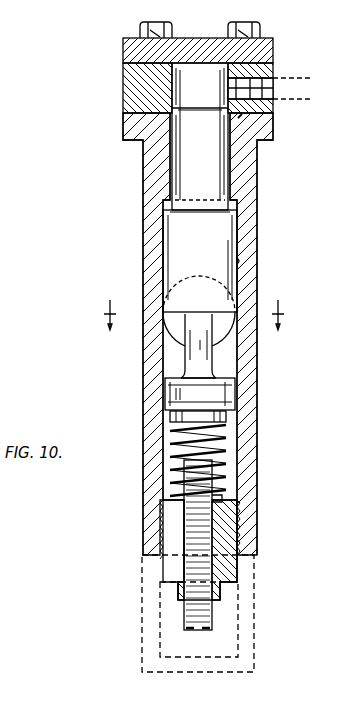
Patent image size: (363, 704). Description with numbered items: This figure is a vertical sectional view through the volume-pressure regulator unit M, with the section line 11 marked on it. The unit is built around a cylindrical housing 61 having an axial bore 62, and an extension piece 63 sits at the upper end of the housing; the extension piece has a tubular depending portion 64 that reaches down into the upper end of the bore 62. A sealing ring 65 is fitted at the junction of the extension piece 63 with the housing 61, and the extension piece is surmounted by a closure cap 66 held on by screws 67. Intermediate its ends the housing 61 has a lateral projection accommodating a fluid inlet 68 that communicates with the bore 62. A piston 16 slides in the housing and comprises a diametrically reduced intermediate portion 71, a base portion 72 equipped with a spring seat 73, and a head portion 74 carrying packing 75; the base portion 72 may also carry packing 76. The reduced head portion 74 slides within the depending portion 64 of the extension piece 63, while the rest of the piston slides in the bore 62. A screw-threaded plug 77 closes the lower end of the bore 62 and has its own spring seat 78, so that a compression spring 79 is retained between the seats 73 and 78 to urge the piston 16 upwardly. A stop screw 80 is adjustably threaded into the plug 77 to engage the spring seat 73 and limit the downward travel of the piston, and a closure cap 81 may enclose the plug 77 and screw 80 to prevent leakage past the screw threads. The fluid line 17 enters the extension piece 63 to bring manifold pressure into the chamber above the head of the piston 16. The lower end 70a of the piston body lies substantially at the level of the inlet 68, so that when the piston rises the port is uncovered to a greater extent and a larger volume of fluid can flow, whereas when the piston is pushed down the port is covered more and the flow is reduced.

The section line 11- 11 is at (196, 307).
The piston 16 is at (230, 276).
The fluid line 17 is at (312, 78).
The cylindrical housing 61 is at (258, 358).
The axial bore 62 is at (240, 261).
The extension piece 63 is at (122, 94).
The tubular depending portion 64 is at (258, 167).
The sealing ring 65 is at (242, 118).
The closure cap 66 is at (273, 52).
The screws 67 is at (260, 27).
The fluid inlet 68 is at (215, 340).
The lower end of the piston body 70a is at (163, 348).
The diametrically reduced intermediate portion 71 is at (213, 368).
The base portion 72 is at (235, 400).
The spring seat 73 is at (226, 418).
The head portion 74 is at (215, 186).
The packing 75 is at (200, 140).
The packing 76 is at (165, 396).
The screw-threaded plug 77 is at (238, 538).
The spring seat 78 is at (222, 499).
The compression spring 79 is at (226, 453).
The stop screw 80 is at (238, 575).
The closure cap 81 is at (254, 634).
The volume-pressure regulator unit M is at (258, 230).